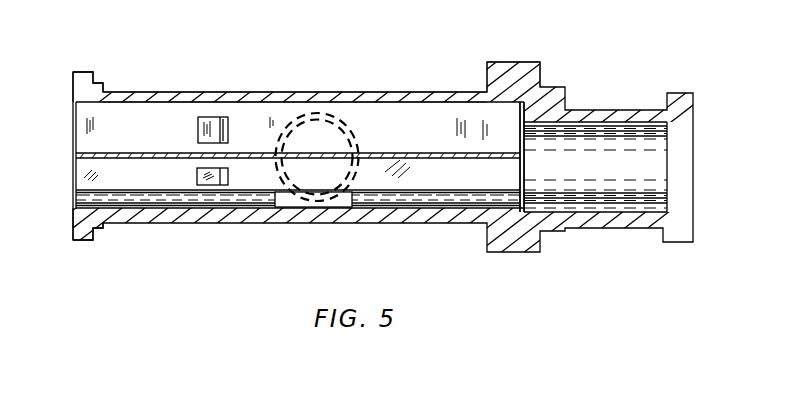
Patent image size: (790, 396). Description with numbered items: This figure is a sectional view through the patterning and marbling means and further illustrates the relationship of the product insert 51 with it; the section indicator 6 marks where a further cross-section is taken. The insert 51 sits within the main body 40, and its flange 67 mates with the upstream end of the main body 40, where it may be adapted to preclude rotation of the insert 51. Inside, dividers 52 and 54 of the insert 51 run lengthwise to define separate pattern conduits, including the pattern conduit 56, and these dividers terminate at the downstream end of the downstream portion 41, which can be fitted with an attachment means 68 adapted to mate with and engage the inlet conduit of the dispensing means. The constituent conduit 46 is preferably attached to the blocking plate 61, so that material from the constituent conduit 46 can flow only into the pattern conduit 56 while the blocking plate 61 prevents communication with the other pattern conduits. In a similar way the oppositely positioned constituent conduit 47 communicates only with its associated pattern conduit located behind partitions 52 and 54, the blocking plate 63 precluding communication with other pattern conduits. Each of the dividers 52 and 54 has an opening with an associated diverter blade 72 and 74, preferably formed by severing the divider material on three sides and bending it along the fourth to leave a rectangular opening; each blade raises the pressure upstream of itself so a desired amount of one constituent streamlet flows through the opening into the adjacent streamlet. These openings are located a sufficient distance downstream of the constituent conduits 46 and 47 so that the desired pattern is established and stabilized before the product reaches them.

The main body 40 is at (295, 224).
The downstream portion 41 is at (172, 92).
The constituent conduit 46 is at (602, 229).
The constituent conduit 47 is at (343, 123).
The product insert 51 is at (411, 145).
The divider 52 is at (131, 138).
The divider 54 is at (131, 185).
The pattern conduit 56 is at (541, 173).
The blocking plate 61 is at (520, 135).
The blocking plate 63 is at (273, 196).
The flange 67 is at (538, 78).
The attachment means 68 is at (82, 72).
The diverter blade 72 is at (198, 121).
The diverter blade 74 is at (197, 175).
The section line 6- 6 is at (190, 75).